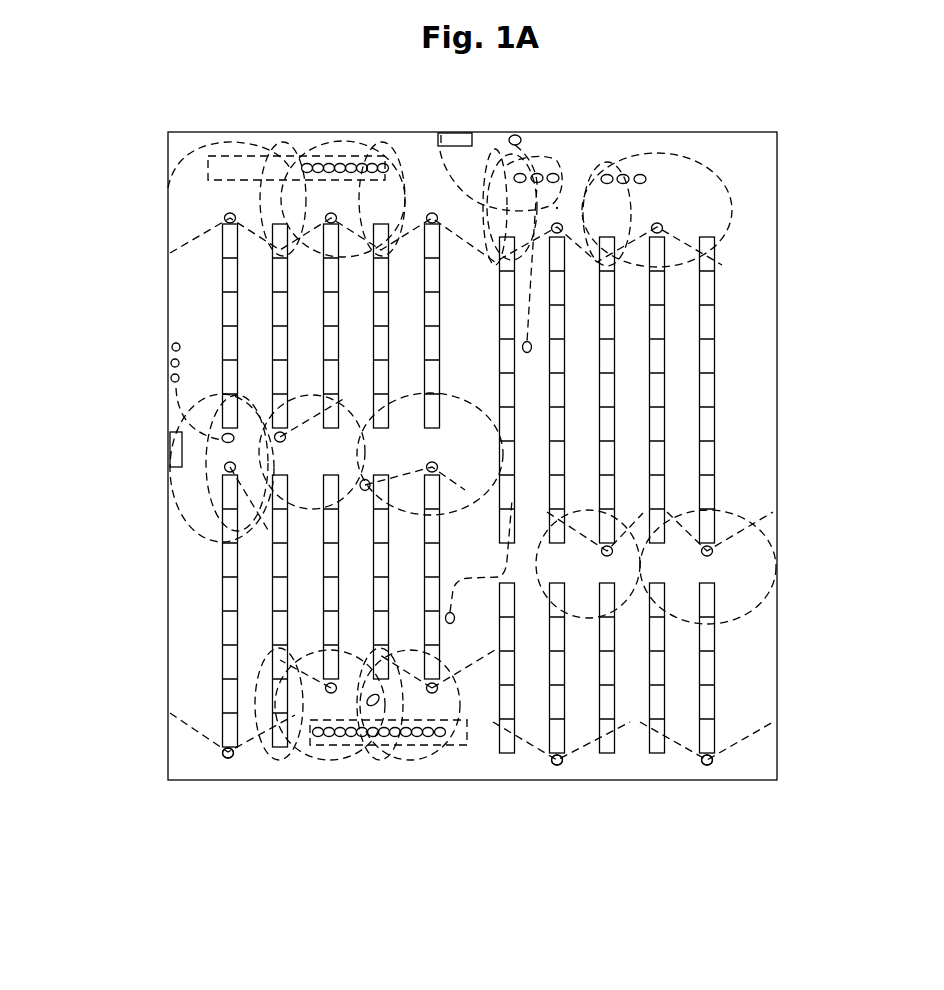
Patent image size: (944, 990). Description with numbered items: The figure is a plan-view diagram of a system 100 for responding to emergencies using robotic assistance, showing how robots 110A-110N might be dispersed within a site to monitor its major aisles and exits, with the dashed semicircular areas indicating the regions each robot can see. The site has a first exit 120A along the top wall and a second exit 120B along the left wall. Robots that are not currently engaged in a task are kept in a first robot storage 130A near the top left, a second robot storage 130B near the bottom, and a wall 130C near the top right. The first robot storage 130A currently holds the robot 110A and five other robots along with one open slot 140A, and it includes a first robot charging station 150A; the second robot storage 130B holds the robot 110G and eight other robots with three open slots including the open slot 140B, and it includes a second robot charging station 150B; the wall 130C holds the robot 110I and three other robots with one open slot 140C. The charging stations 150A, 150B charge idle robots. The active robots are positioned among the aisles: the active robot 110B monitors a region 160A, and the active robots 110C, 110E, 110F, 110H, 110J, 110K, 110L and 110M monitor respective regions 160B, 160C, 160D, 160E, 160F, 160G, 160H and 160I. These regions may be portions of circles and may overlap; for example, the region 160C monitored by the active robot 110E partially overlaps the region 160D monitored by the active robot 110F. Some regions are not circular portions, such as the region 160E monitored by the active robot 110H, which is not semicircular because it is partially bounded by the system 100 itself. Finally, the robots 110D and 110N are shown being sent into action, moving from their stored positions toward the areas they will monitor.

The system 100 is at (226, 796).
The robot 110A is at (315, 160).
The active robot 110B is at (326, 219).
The active robot 110C is at (225, 472).
The robot 110D is at (363, 490).
The active robot 110E is at (223, 753).
The active robot 110F is at (328, 693).
The robot 110G is at (371, 705).
The active robot 110H is at (521, 137).
The robot 110I is at (556, 205).
The active robot 110J is at (662, 225).
The active robot 110K is at (612, 552).
The active robot 110L is at (559, 766).
The active robot 110M is at (708, 767).
The robot 110N is at (533, 348).
The first exit 120A is at (443, 133).
The second exit 120B is at (170, 441).
The first robot storage 130A is at (281, 157).
The second robot storage 130B is at (366, 722).
The wall 130C is at (676, 162).
The open slot 140A is at (305, 160).
The open slot 140B is at (440, 740).
The open slot 140C is at (541, 176).
The first robot charging station 150A is at (207, 167).
The second robot charging station 150B is at (455, 758).
The region 160A is at (343, 199).
The region 160B is at (222, 468).
The region 160C is at (222, 736).
The region 160D is at (330, 705).
The region 160E is at (492, 148).
The region 160F is at (657, 210).
The region 160G is at (588, 564).
The region 160H is at (584, 766).
The region 160I is at (735, 764).